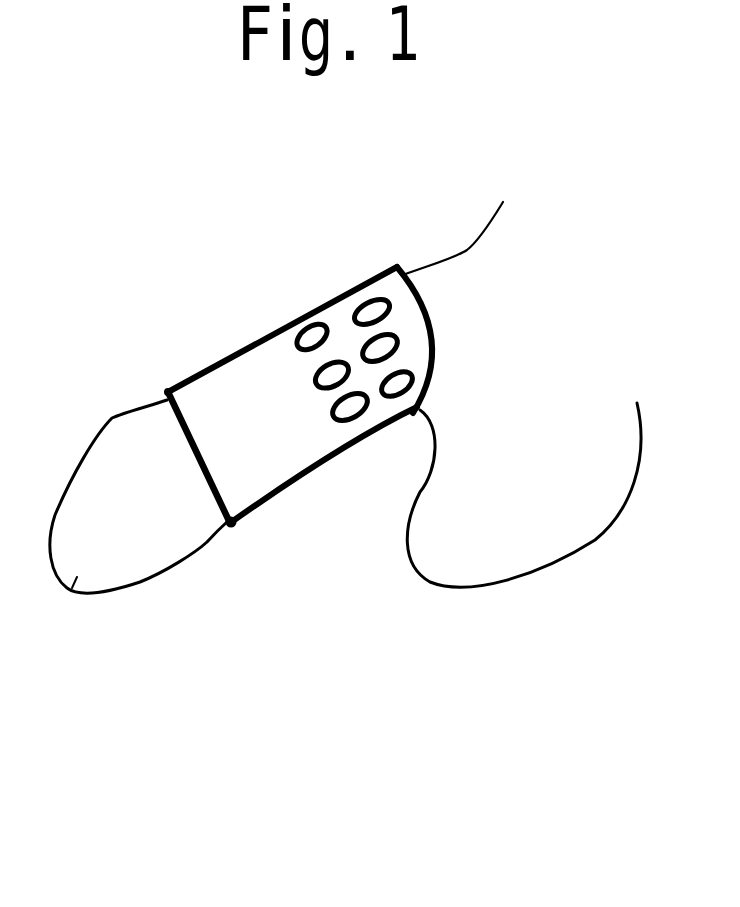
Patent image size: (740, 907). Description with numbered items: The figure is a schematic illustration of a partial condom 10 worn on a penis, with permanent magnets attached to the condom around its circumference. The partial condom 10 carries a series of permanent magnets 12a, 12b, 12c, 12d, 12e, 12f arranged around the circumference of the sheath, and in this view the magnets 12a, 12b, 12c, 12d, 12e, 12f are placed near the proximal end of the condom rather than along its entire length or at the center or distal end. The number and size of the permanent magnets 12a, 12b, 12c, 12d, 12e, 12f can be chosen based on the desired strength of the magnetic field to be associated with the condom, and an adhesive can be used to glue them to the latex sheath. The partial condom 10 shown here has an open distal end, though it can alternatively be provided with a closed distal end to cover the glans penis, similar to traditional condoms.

The partial condom 10 is at (253, 473).
The permanent magnet 12a is at (377, 300).
The permanent magnet 12b is at (362, 349).
The permanent magnet 12c is at (400, 397).
The permanent magnet 12d is at (303, 322).
The permanent magnet 12e is at (313, 376).
The permanent magnet 12f is at (347, 421).